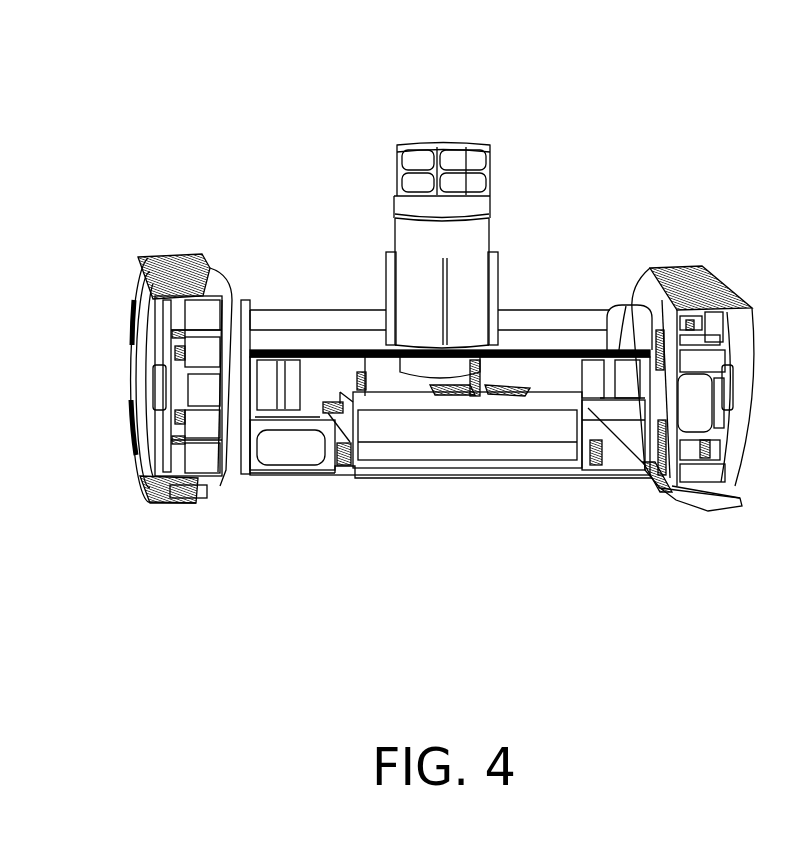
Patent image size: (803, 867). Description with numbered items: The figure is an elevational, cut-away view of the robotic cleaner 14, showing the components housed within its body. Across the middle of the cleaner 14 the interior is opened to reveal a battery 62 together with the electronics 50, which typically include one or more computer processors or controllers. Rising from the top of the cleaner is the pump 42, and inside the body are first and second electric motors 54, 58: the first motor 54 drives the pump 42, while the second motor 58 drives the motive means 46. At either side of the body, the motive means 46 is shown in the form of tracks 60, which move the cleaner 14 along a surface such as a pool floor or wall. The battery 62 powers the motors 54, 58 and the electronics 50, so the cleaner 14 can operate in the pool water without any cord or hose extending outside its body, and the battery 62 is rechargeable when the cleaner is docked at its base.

The cleaner 14 is at (672, 118).
The pump 42 is at (470, 165).
The motive means 46 is at (113, 384).
The electronics 50 is at (572, 440).
The first electric motor 54 is at (428, 368).
The second electric motor 58 is at (335, 370).
The tracks 60 is at (676, 266).
The battery 62 is at (412, 448).